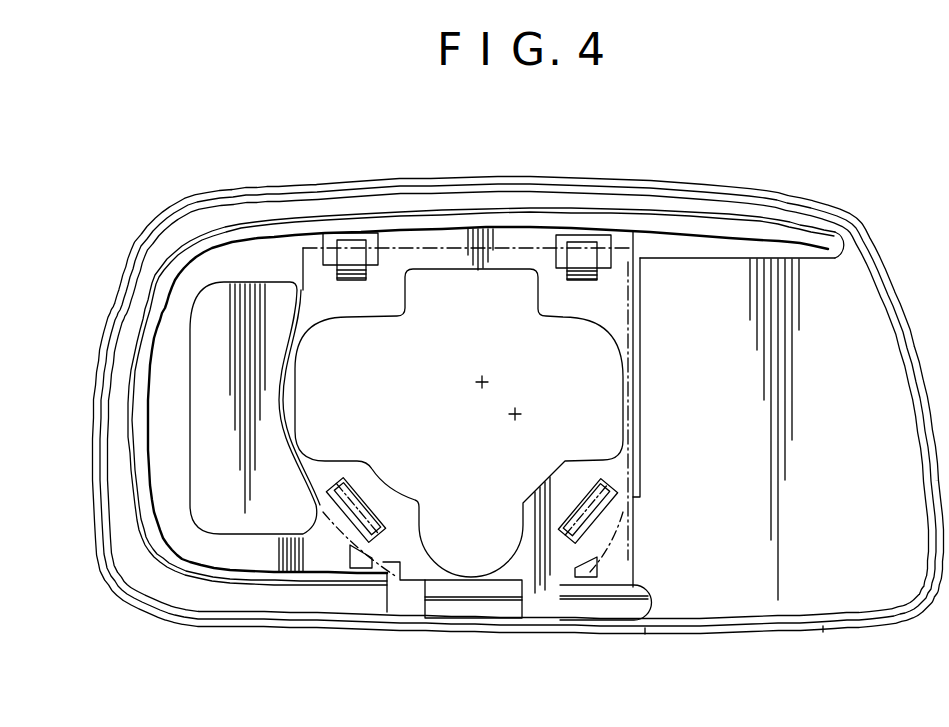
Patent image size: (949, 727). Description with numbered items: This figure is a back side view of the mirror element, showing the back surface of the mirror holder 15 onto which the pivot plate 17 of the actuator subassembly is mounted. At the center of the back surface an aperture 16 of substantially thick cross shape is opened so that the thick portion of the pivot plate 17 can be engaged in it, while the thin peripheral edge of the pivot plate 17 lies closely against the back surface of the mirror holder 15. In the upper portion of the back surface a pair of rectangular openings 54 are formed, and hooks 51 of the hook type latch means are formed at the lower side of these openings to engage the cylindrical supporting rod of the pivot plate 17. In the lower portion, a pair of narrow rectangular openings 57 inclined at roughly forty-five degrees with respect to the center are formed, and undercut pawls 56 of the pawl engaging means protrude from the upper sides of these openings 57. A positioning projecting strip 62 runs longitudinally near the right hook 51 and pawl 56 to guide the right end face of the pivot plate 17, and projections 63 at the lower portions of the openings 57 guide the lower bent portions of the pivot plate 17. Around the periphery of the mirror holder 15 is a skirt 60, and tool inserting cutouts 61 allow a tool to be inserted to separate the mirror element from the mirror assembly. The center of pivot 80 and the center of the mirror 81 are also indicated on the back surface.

The mirror holder 15 is at (865, 274).
The pivot plate 17 is at (306, 276).
The aperture 16 is at (467, 476).
The positioning projecting strip 62 is at (641, 357).
The rectangular openings 54 is at (325, 234).
The hook 51 is at (349, 248).
The center of pivot 80 is at (485, 379).
The center of the mirror 81 is at (520, 414).
The pawl 56 is at (360, 500).
The rectangular opening 57 is at (323, 513).
The projections 63 is at (358, 566).
The tool inserting cutout 61 is at (407, 631).
The skirt 60 is at (721, 631).